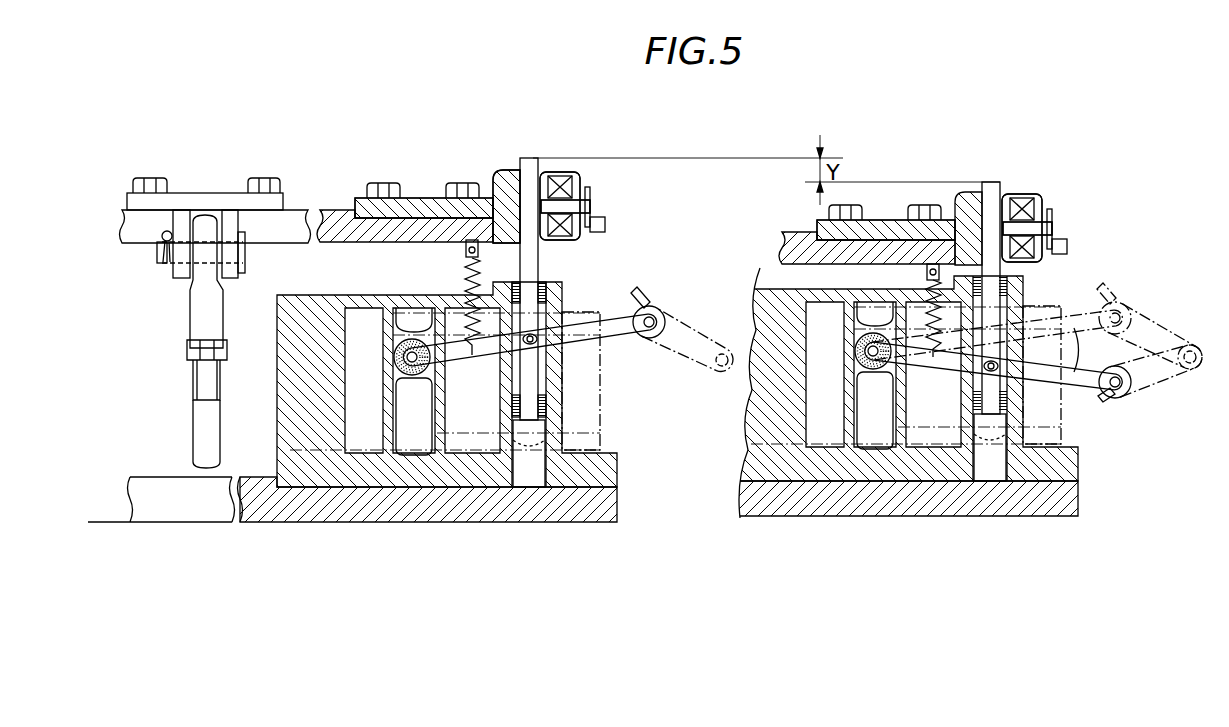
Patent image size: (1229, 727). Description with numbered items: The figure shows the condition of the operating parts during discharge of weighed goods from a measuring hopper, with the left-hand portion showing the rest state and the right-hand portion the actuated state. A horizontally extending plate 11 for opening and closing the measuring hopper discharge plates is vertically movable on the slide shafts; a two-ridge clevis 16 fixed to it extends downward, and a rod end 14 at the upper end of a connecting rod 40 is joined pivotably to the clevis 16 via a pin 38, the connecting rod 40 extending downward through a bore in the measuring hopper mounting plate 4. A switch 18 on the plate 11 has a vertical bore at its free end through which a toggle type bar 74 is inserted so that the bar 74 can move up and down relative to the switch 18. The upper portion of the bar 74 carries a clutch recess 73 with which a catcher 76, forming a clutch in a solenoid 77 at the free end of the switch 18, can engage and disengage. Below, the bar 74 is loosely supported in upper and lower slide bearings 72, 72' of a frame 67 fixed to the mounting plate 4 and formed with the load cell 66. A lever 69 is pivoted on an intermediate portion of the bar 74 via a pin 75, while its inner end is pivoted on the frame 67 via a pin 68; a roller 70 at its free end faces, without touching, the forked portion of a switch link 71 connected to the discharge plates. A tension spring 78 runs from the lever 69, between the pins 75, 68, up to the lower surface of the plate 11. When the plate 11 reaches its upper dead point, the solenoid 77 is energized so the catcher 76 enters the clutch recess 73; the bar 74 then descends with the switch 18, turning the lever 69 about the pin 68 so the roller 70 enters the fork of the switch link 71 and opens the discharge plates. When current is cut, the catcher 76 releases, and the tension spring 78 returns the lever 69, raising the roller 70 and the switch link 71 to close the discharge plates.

The measuring hopper mounting plate 4 is at (217, 523).
The plate for opening and closing discharge plates of a measuring hopper 11 is at (343, 212).
The rod end 14 is at (200, 322).
The two-ridge clevis 16 is at (226, 280).
The switch 18 is at (430, 200).
The pin 38 is at (163, 258).
The connecting rod 40 is at (205, 425).
The load cell 66 is at (587, 300).
The frame 67 is at (330, 295).
The pin 68 is at (433, 360).
The lever 69 is at (583, 337).
The roller 70 is at (650, 305).
The switch link 71 is at (693, 332).
The upper slide bearing 72 is at (564, 269).
The lower slide bearing 72' is at (587, 420).
The clutch recess 73 is at (533, 172).
The toggle type bar 74 is at (529, 158).
The pin 75 is at (528, 345).
The catcher 76 is at (606, 213).
The solenoid 77 is at (580, 175).
The tension spring 78 is at (465, 280).